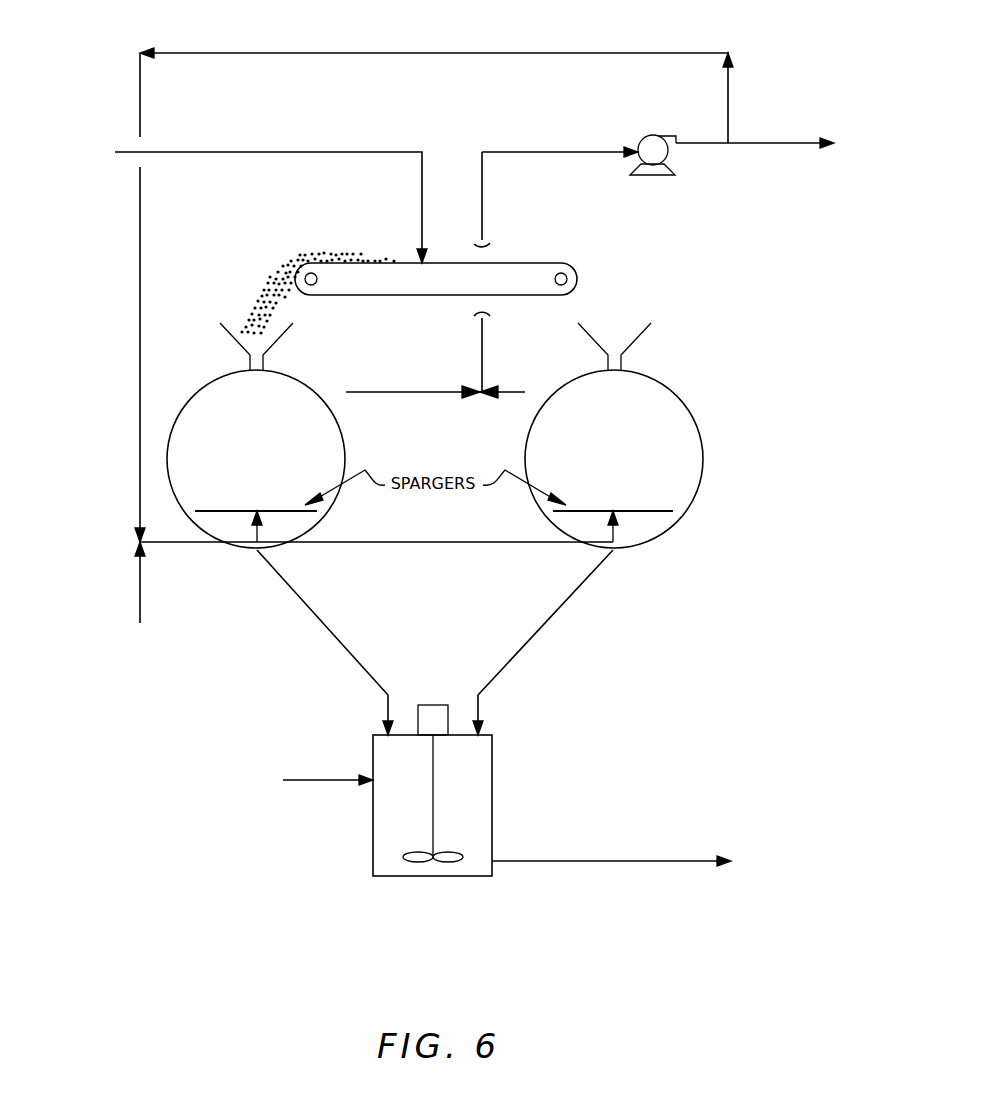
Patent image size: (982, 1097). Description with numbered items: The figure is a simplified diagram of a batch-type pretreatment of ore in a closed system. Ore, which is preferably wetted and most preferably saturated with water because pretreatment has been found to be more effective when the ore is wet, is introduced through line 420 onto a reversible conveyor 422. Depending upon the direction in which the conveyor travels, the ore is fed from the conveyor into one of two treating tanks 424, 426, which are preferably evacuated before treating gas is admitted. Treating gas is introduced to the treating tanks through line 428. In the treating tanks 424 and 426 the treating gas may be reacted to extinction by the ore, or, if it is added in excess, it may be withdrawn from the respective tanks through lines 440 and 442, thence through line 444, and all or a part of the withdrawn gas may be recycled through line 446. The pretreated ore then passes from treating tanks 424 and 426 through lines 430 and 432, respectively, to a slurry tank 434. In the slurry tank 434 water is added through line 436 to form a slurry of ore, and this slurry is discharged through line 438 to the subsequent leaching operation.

The line 420 is at (279, 151).
The reversible conveyor 422 is at (536, 263).
The treating tank 424 is at (345, 418).
The treating tank 426 is at (676, 394).
The line 428 is at (140, 593).
The line 430 is at (318, 616).
The line 432 is at (555, 616).
The slurry tank 434 is at (493, 770).
The line 436 is at (318, 783).
The line 438 is at (562, 863).
The line 440 is at (437, 394).
The line 442 is at (528, 391).
The line 444 is at (483, 150).
The line 446 is at (405, 53).